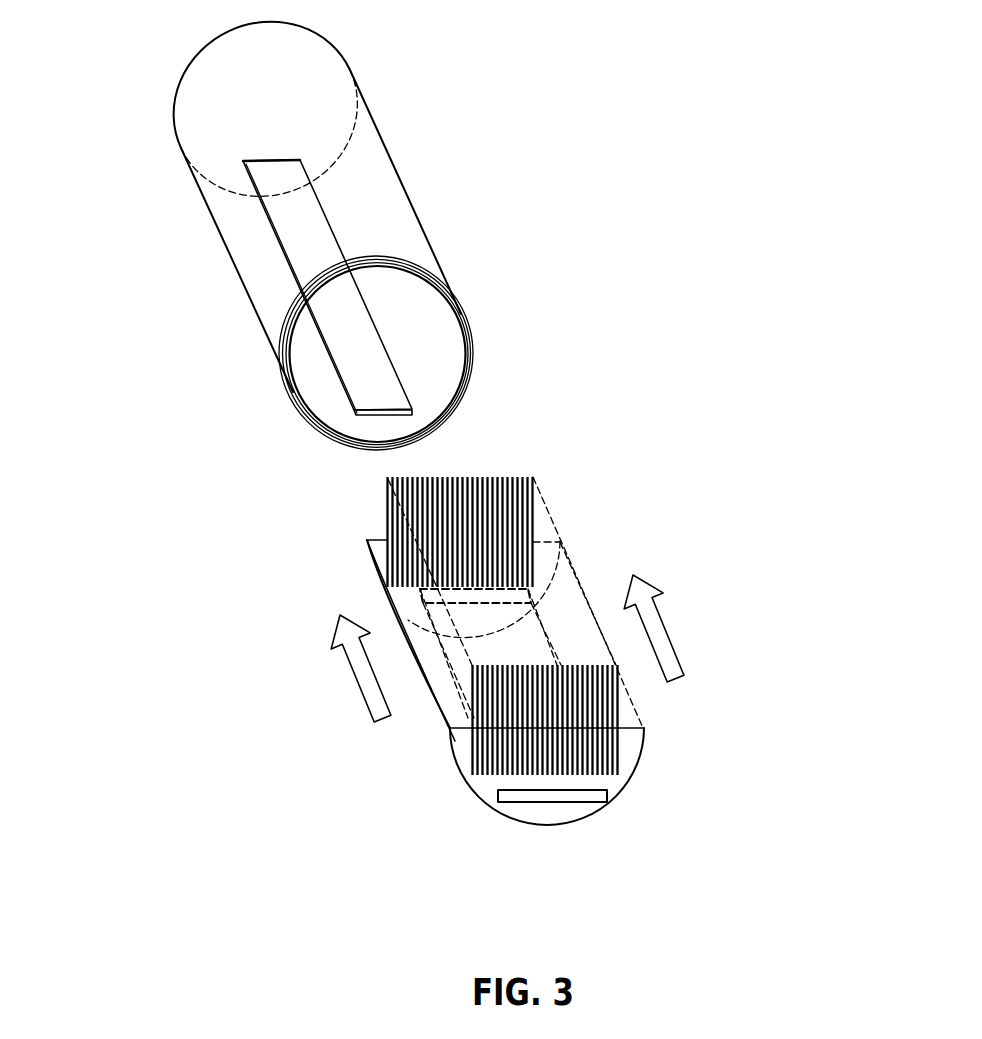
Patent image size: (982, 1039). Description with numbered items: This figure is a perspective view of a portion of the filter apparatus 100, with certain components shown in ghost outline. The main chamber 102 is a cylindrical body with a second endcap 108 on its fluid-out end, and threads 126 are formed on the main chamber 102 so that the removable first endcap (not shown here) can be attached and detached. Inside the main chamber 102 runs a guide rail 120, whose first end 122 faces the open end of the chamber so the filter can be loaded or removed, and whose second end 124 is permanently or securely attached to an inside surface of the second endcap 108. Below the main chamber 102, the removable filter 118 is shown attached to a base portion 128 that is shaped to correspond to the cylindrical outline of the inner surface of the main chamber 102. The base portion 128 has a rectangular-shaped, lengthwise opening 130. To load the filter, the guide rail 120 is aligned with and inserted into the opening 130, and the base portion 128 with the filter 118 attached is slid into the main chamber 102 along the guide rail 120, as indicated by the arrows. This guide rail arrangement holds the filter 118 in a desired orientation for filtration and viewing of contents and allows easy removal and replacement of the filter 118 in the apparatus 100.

The filter apparatus 100 is at (738, 129).
The main chamber 102 is at (407, 190).
The second endcap 108 is at (305, 62).
The removable filter 118 is at (530, 464).
The guide rail 120 is at (298, 242).
The first end of the guide rail 122 is at (356, 432).
The second end of the guide rail 124 is at (255, 145).
The threads 126 is at (470, 380).
The base portion 128 is at (632, 747).
The lengthwise opening 130 is at (478, 799).